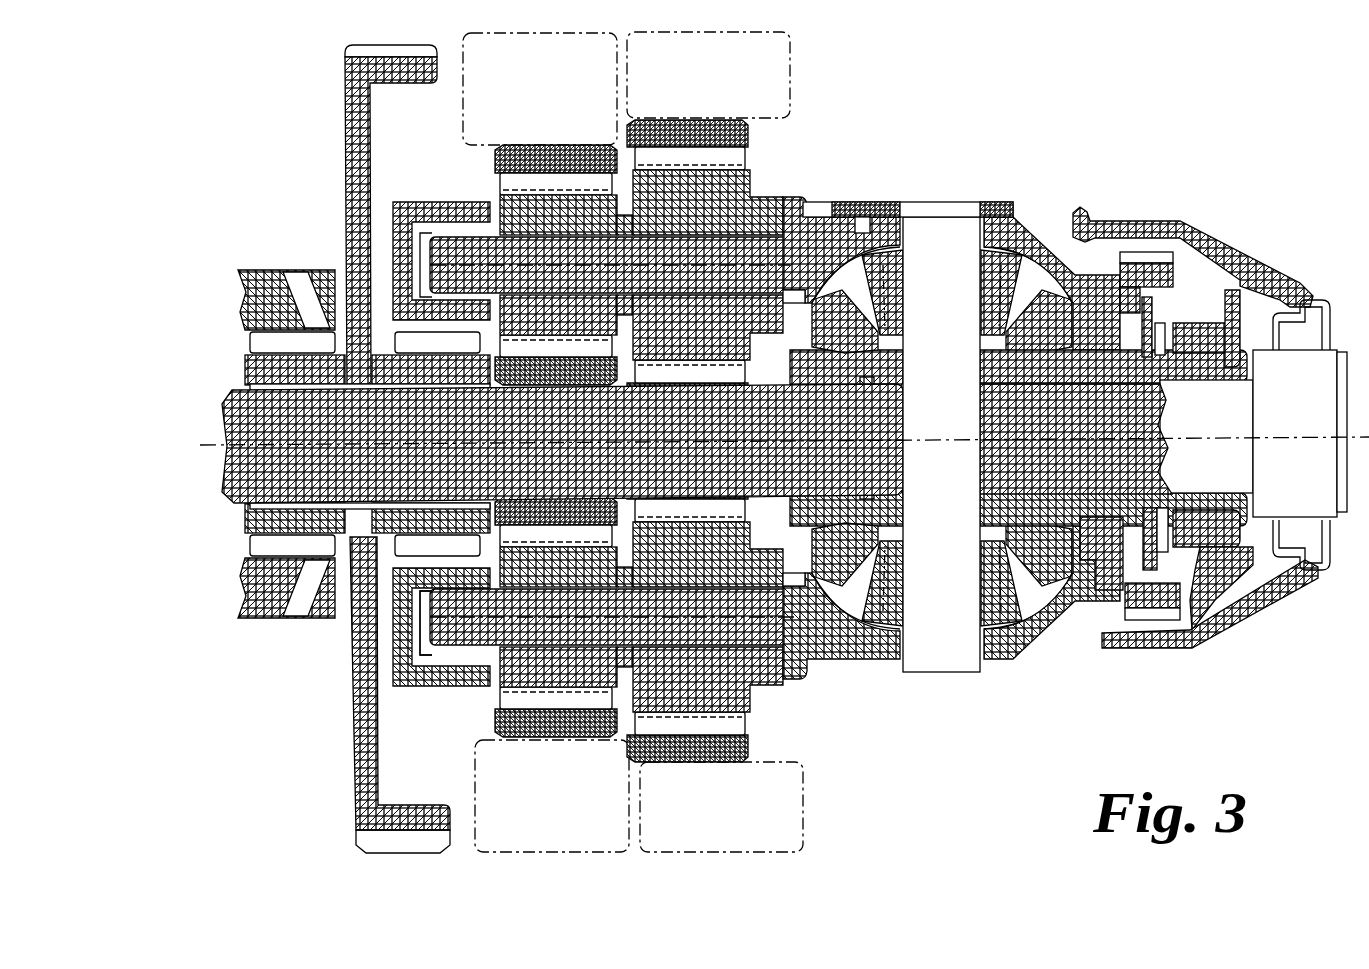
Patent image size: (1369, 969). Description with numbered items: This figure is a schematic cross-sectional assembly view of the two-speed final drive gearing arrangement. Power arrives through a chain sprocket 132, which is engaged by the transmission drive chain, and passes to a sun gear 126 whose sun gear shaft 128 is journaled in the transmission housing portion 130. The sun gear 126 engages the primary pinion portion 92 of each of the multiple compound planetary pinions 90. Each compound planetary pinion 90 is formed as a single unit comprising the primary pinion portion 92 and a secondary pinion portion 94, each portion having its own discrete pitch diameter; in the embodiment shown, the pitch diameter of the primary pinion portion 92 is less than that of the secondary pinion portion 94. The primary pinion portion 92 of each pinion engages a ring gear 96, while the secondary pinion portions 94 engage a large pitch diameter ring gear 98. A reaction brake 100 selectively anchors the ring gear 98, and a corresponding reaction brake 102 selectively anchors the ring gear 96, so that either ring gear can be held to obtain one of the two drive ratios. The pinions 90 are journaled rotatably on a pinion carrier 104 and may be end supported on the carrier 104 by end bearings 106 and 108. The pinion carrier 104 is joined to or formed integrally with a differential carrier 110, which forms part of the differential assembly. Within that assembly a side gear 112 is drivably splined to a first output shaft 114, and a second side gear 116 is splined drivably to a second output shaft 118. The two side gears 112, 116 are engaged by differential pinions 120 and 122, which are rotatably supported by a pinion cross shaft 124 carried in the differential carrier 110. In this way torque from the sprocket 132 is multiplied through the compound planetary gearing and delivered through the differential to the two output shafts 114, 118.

The compound planetary pinion 90 is at (782, 586).
The primary pinion portion 92 is at (517, 687).
The secondary pinion portion 94 is at (735, 693).
The ring gear 96 is at (496, 153).
The large pitch diameter ring gear 98 is at (737, 128).
The reaction brake 100 is at (767, 67).
The reaction brake 102 is at (522, 108).
The pinion carrier 104 is at (405, 668).
The end bearing 106 is at (463, 587).
The end bearing 108 is at (843, 625).
The differential carrier 110 is at (1012, 290).
The side gear 112 is at (1073, 290).
The first output shaft 114 is at (1206, 470).
The second side gear 116 is at (832, 354).
The second output shaft 118 is at (252, 457).
The differential pinion 120 is at (962, 300).
The differential pinion 122 is at (1043, 613).
The pinion cross shaft 124 is at (947, 613).
The sun gear 126 is at (596, 384).
The sun gear shaft 128 is at (340, 366).
The transmission housing portion 130 is at (248, 271).
The chain sprocket 132 is at (353, 62).